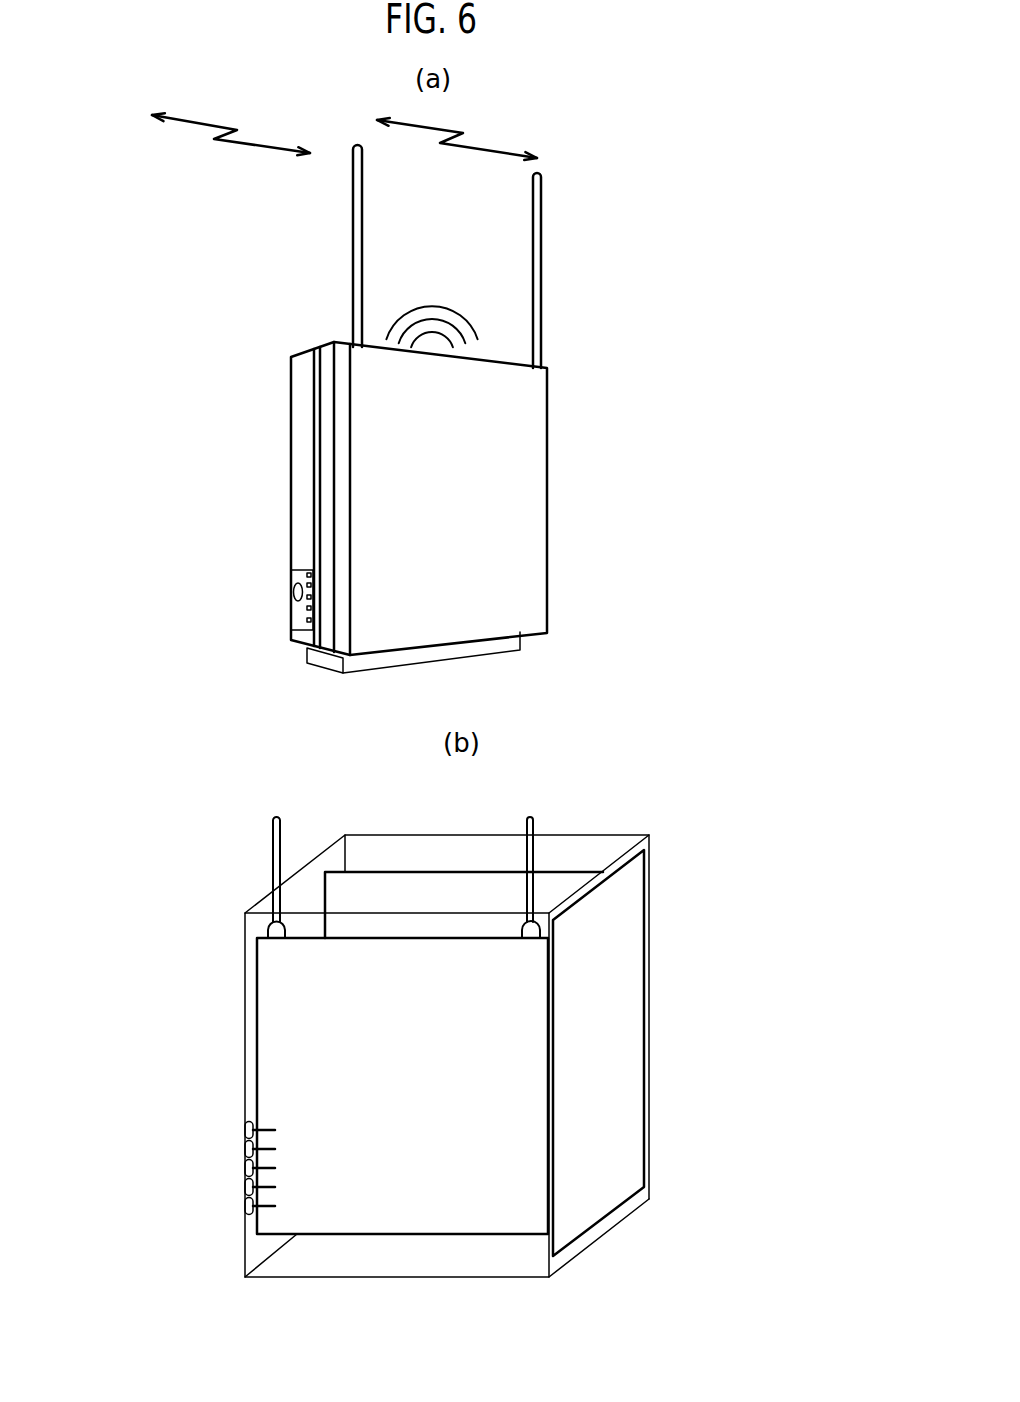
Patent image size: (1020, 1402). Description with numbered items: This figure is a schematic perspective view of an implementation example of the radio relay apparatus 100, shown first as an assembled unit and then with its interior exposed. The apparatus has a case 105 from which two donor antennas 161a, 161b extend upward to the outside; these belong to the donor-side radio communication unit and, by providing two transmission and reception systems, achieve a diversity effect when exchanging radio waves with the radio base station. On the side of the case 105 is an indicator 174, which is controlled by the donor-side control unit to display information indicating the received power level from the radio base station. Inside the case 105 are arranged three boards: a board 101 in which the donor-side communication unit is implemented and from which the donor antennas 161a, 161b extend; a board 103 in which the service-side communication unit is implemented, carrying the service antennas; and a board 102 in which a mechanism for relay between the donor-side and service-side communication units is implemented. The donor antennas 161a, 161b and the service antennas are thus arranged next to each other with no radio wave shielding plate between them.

The radio relay apparatus 100 is at (668, 208).
The board 101 is at (268, 992).
The board 102 is at (628, 945).
The board 103 is at (357, 882).
The case 105 is at (547, 388).
The donor antenna 161a is at (362, 262).
The donor antenna 161b is at (541, 263).
The indicator 174 is at (303, 608).